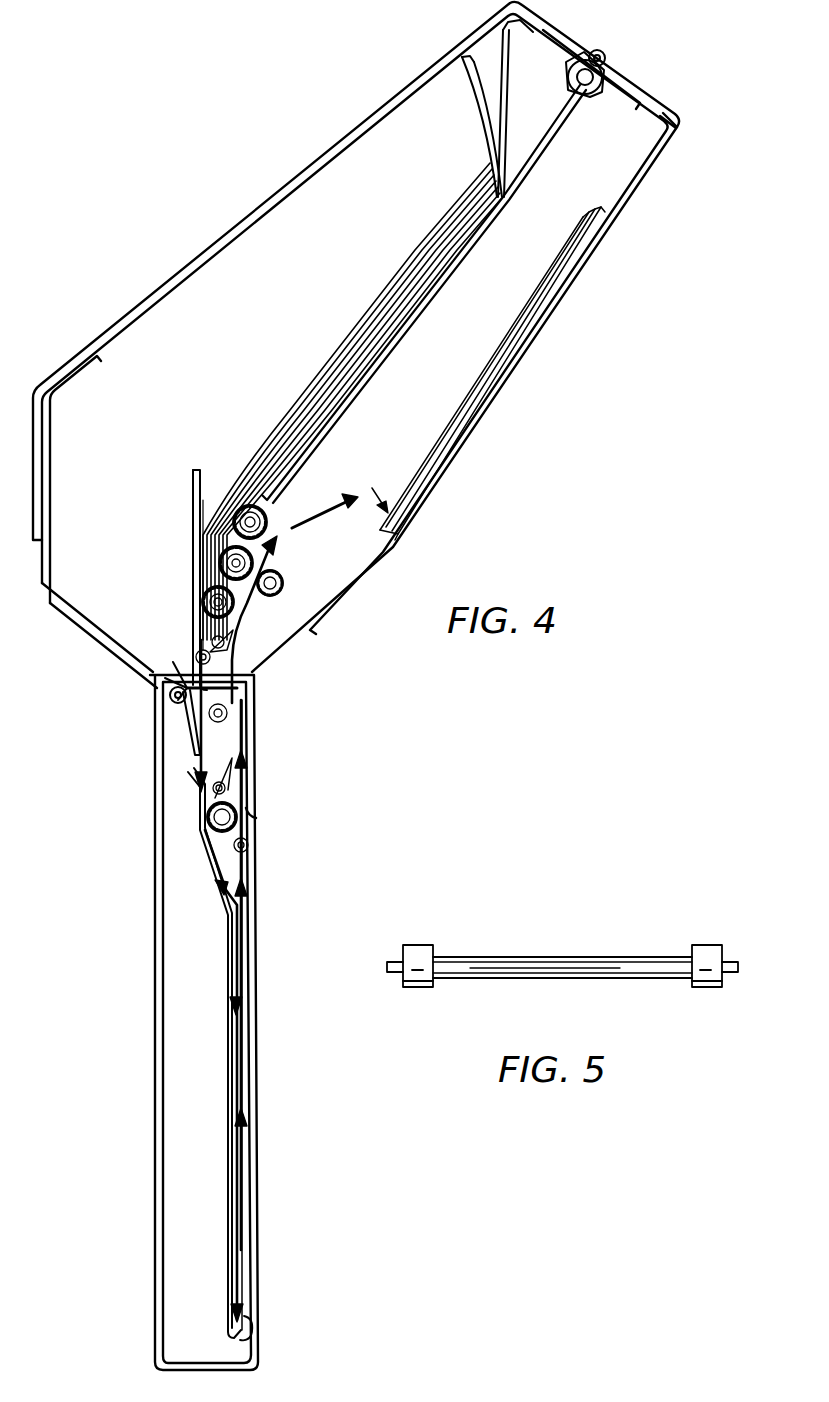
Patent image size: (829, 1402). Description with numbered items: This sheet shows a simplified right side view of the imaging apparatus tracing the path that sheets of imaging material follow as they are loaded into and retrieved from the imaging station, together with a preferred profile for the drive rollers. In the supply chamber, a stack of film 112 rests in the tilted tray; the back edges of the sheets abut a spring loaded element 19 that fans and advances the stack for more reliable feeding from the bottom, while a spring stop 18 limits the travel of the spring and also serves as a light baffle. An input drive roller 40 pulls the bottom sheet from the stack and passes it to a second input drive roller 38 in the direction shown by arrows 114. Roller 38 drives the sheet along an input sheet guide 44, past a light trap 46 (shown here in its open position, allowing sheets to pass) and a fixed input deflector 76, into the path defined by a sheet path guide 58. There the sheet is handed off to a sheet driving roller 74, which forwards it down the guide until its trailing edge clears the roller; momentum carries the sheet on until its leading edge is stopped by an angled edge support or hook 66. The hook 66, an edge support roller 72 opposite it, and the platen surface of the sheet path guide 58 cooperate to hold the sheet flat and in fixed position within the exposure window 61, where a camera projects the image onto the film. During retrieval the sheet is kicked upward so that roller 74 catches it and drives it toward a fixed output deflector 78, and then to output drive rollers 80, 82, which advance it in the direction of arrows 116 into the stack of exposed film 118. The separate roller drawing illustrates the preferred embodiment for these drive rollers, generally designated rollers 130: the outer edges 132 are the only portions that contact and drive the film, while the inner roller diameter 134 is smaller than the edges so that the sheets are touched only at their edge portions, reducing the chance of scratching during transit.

In FIG. 4, the spring stop 18 is at (503, 121).
In FIG. 4, the spring loaded element 19 is at (492, 127).
In FIG. 4, the stack of film 112 is at (370, 312).
In FIG. 4, the stack of exposed film 118 is at (485, 383).
In FIG. 4, the input drive roller 40 is at (258, 515).
In FIG. 4, the output drive roller 80 is at (283, 573).
In FIG. 4, the output drive roller 82 is at (241, 580).
In FIG. 4, the input sheet guide 44 is at (195, 565).
In FIG. 4, the input drive roller 38 is at (197, 585).
In FIG. 4, the arrows 114 is at (202, 638).
In FIG. 4, the arrows 116 is at (250, 652).
In FIG. 4, the fixed output deflector 78 is at (250, 677).
In FIG. 4, the light trap 46 is at (190, 738).
In FIG. 4, the fixed input deflector 76 is at (223, 773).
In FIG. 4, the sheet path guide 58 is at (190, 782).
In FIG. 4, the sheet driving roller 74 is at (200, 823).
In FIG. 4, the edge support roller 72 is at (253, 848).
In FIG. 4, the exposure window 61 is at (265, 1140).
In FIG. 4, the angled edge support (hook) 66 is at (252, 1336).
In FIG. 5, the outer edges 132 is at (432, 946).
In FIG. 5, the inner roller diameter 134 is at (532, 955).
In FIG. 5, the rollers 130 is at (573, 980).